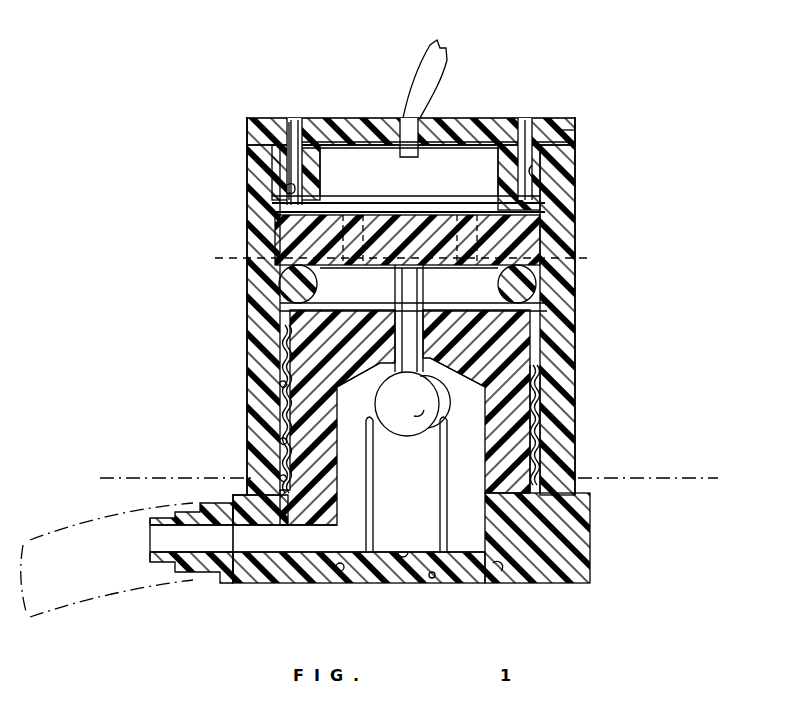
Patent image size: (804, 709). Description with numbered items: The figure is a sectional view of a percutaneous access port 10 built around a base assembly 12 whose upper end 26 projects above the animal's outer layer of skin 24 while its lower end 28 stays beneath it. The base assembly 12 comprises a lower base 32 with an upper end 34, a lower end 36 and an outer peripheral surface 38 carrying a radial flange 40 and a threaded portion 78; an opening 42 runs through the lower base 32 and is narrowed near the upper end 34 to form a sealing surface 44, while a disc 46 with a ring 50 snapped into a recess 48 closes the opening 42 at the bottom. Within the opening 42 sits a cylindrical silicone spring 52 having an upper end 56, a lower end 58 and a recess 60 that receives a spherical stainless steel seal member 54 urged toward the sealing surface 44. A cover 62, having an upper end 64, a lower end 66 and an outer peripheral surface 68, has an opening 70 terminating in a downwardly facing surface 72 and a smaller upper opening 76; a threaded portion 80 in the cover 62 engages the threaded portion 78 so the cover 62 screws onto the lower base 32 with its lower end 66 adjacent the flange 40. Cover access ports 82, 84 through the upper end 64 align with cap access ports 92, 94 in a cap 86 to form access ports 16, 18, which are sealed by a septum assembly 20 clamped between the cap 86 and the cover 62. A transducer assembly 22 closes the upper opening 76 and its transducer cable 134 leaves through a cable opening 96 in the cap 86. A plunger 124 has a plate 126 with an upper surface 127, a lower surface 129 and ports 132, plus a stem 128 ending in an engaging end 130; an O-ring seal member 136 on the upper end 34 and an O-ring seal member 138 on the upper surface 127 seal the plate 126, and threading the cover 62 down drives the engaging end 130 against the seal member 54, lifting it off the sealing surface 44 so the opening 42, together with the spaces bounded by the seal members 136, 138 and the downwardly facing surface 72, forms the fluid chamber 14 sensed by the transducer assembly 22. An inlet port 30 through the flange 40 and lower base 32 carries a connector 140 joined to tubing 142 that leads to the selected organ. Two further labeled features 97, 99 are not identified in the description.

The percutaneous access port 10 is at (567, 97).
The base assembly 12 is at (578, 169).
The fluid chamber 14 is at (540, 353).
The access port 16 is at (293, 118).
The access port 18 is at (532, 118).
The septum assembly 20 is at (247, 146).
The transducer assembly 22 is at (343, 118).
The outer layer of skin 24 is at (612, 478).
The upper end 26 is at (562, 117).
The lower end 28 is at (548, 585).
The inlet port 30 is at (253, 552).
The lower base 32 is at (545, 386).
The upper end 34 is at (262, 322).
The lower end 36 is at (262, 552).
The outer peripheral surface 38 is at (290, 333).
The flange 40 is at (580, 490).
The opening 42 is at (280, 418).
The sealing surface 44 is at (445, 378).
The disc 46 is at (434, 578).
The recess 48 is at (338, 573).
The ring 50 is at (498, 566).
The spring 52 is at (373, 535).
The seal member 54 is at (380, 400).
The upper end 56 is at (367, 422).
The lower end 58 is at (403, 560).
The recess 60 is at (421, 402).
The cover 62 is at (560, 290).
The upper end 64 is at (575, 130).
The lower end 66 is at (560, 500).
The outer peripheral surface 68 is at (575, 428).
The opening 70 is at (548, 320).
The downwardly facing surface 72 is at (352, 160).
The upper opening 76 is at (331, 118).
The threaded portion 78 is at (278, 388).
The threaded portion 80 is at (283, 458).
The cover access port 82 is at (247, 182).
The cover access port 84 is at (575, 182).
The cap 86 is at (468, 118).
The cap access port 92 is at (300, 118).
The cap access port 94 is at (537, 118).
The cable opening 96 is at (390, 118).
The passage 97 is at (325, 118).
The chamber 99 is at (455, 160).
The plunger 124 is at (555, 245).
The plate 126 is at (250, 250).
The upper surface 127 is at (463, 240).
The stem 128 is at (394, 292).
The lower surface 129 is at (486, 272).
The engaging end 130 is at (447, 428).
The ports 132 is at (628, 250).
The transducer cable 134 is at (437, 40).
The O-ring seal member 136 is at (247, 290).
The O-ring seal member 138 is at (272, 206).
The connector 140 is at (190, 577).
The tubing 142 is at (55, 600).